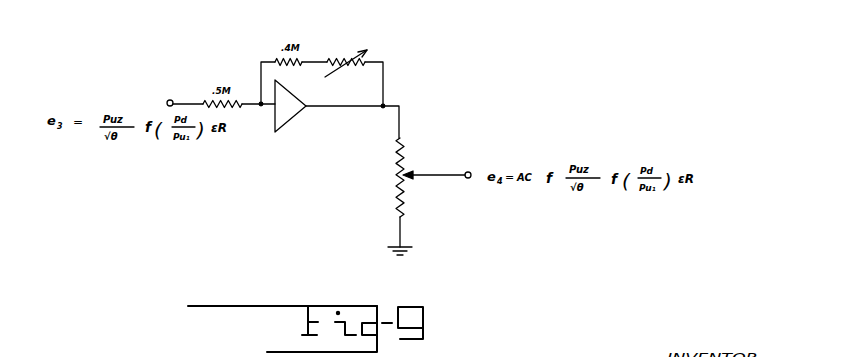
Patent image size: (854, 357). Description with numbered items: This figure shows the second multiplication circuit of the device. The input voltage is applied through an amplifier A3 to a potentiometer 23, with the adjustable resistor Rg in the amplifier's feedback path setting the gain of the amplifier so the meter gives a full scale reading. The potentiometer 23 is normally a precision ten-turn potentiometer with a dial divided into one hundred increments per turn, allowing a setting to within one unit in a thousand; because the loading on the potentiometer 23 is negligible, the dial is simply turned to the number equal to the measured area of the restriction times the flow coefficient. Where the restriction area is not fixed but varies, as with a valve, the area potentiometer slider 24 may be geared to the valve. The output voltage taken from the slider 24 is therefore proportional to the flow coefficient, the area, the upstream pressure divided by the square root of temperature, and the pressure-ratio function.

The potentiometer 23 is at (407, 139).
The area potentiometer slider 24 is at (438, 174).
The amplifier A3 is at (290, 106).
The gain resistor Rg is at (346, 60).